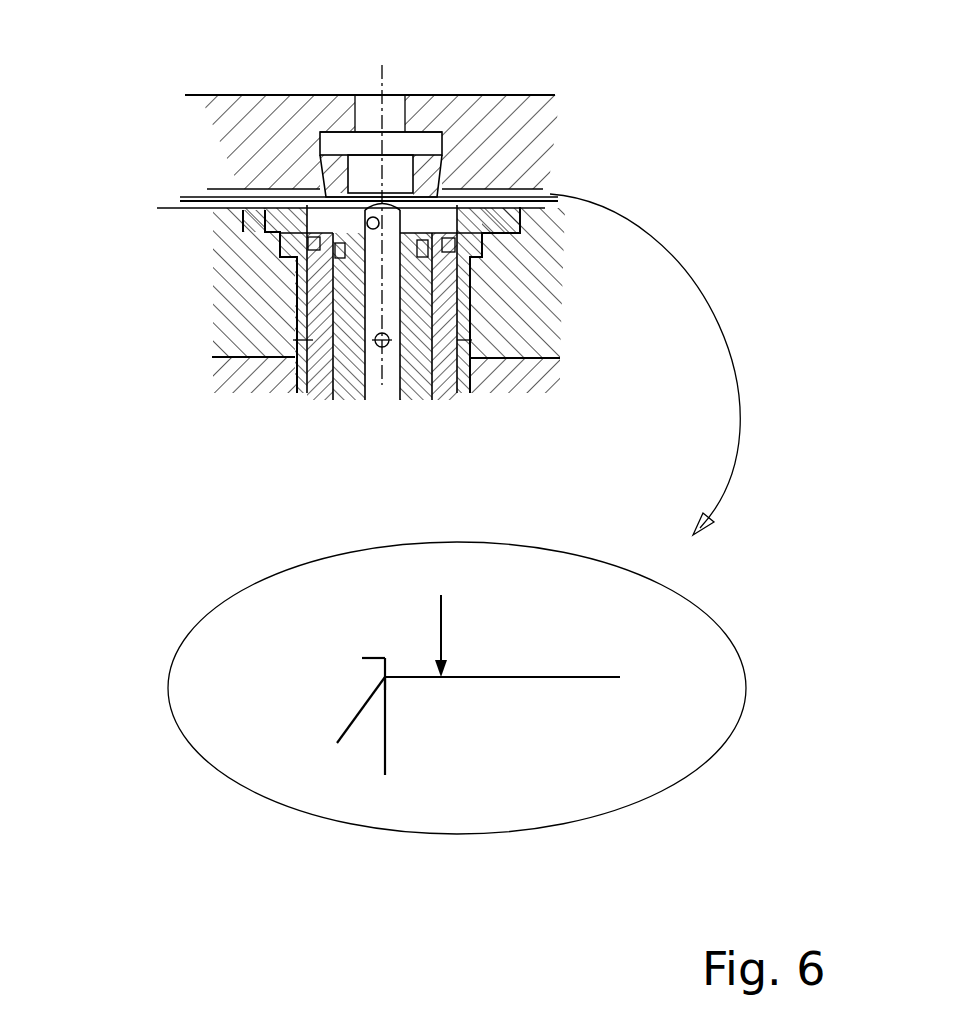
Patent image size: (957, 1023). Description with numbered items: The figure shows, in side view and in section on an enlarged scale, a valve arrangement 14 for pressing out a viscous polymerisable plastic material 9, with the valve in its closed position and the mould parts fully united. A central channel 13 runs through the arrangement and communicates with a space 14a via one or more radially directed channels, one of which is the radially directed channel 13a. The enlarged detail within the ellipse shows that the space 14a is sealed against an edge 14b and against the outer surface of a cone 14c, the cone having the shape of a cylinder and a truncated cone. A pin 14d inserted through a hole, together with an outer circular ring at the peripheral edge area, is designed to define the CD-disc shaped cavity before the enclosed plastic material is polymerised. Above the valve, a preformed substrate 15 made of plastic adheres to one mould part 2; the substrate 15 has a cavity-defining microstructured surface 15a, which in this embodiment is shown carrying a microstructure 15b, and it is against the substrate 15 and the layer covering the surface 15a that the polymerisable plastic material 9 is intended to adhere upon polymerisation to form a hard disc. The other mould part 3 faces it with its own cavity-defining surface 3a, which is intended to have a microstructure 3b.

The mould part 2 is at (258, 92).
The other mould part 3 is at (233, 312).
The cavity-defining surface 3a is at (168, 207).
The microstructure 3b is at (459, 627).
The polymerisable plastic material 9 is at (187, 210).
The central channel 13 is at (377, 382).
The radially directed channel 13a is at (512, 252).
The valve arrangement 14 is at (437, 150).
The space 14a is at (351, 732).
The edge 14b is at (385, 695).
The cone 14c is at (366, 701).
The pin 14d is at (337, 150).
The preformed substrate 15 is at (237, 193).
The microstructured surface 15a is at (207, 198).
The microstructure 15b is at (182, 200).